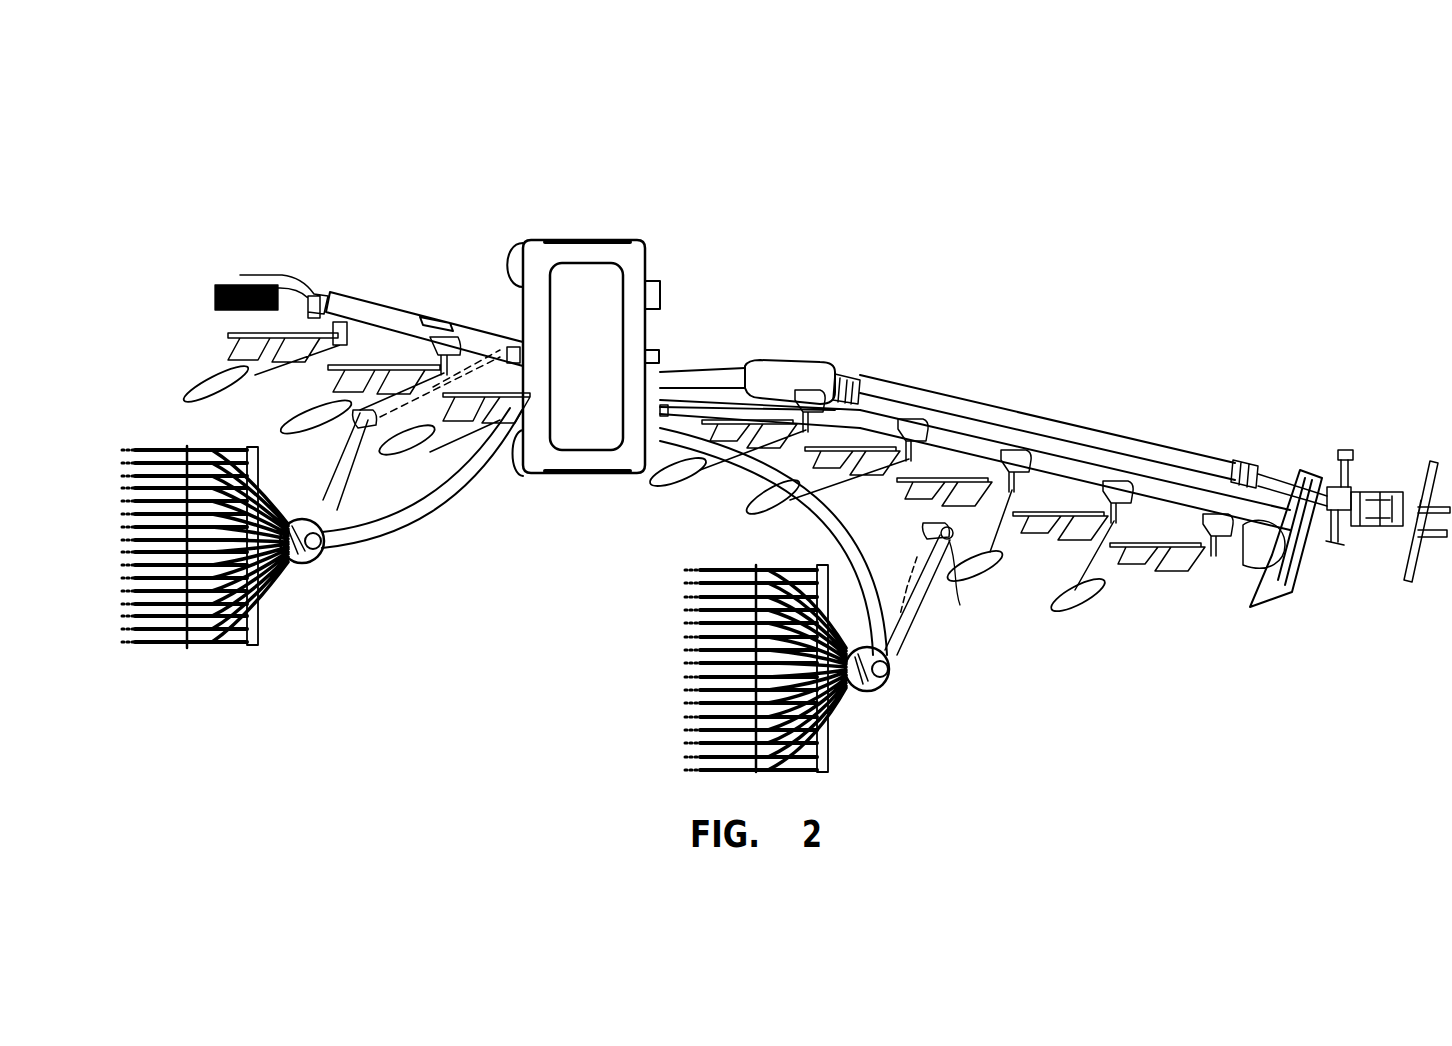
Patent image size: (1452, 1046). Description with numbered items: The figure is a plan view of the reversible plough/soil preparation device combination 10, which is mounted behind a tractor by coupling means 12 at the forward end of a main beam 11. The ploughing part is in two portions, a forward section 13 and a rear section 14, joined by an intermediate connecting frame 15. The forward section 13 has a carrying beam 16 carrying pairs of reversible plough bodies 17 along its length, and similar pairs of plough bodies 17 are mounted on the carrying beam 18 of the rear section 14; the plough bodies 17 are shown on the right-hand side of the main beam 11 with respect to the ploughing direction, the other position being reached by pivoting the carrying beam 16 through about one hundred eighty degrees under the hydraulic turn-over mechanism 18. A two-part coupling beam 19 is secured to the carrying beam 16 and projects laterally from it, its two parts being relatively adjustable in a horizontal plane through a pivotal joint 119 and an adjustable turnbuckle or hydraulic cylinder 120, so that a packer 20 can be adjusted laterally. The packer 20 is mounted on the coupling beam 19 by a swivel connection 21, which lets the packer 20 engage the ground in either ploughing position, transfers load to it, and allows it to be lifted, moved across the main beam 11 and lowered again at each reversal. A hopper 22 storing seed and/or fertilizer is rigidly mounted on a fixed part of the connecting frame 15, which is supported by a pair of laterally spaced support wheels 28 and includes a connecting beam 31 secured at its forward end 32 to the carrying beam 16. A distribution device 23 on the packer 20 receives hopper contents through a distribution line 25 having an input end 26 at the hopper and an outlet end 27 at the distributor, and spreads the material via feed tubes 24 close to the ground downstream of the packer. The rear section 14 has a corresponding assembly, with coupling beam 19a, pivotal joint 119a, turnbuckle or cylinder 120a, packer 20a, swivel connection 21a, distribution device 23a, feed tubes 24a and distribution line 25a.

The reversible plough/soil preparation device combination 10 is at (988, 382).
The main beam 11 is at (1140, 442).
The coupling means 12 is at (1383, 470).
The forward section 13 is at (1018, 618).
The rear section 14 is at (416, 469).
The intermediate connecting frame 15 is at (696, 372).
The carrying beam 16 is at (1072, 470).
The reversible plough bodies 17 is at (1060, 552).
The carrying beam of rear section / hydraulic turn-over mechanism 18 is at (400, 320).
The coupling beam 19 is at (1000, 530).
The coupling beam 19a is at (420, 382).
The packer 20 is at (848, 732).
The packer 20a is at (292, 604).
The swivel connection 21 is at (877, 696).
The swivel connection 21a is at (312, 562).
The hopper 22 is at (658, 262).
The distribution device 23 is at (888, 690).
The distribution device 23a is at (325, 556).
The feed tubes 24 is at (830, 618).
The feed tubes 24a is at (258, 486).
The distribution line 25 is at (822, 498).
The distribution line 25a is at (447, 502).
The input end 26 is at (652, 418).
The outlet end 27 is at (892, 674).
The support wheels 28 is at (510, 256).
The connecting beam 31 is at (728, 378).
The forward end 32 is at (772, 374).
The pivotal joint 119 is at (948, 556).
The pivotal joint 119a is at (370, 408).
The adjustable turnbuckle or hydraulic cylinder 120 is at (903, 573).
The adjustable turnbuckle or hydraulic cylinder 120a is at (345, 440).